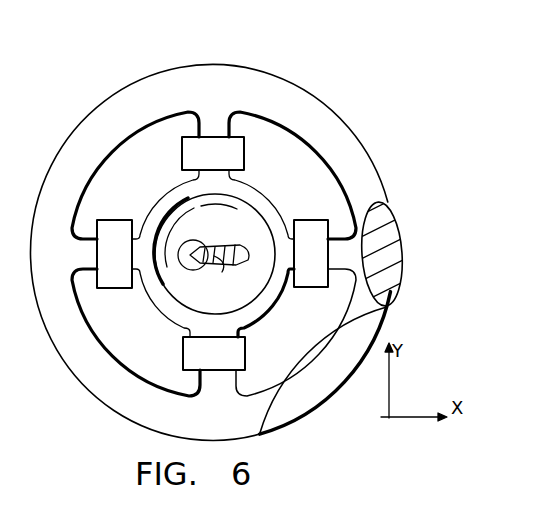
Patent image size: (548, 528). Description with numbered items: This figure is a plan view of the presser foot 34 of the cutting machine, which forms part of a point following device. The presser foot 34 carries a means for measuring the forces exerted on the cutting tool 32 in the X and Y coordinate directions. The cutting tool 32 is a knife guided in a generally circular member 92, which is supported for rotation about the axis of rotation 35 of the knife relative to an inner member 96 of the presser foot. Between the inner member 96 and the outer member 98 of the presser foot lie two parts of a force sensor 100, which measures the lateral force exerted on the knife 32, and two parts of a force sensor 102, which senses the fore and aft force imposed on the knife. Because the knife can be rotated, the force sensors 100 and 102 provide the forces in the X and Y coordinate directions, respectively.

The presser foot 34 is at (345, 124).
The outer member 98 is at (251, 80).
The inner member 96 is at (271, 306).
The force sensor 100 is at (244, 160).
The force sensor 102 is at (117, 220).
The circular member 92 is at (240, 218).
The cutting tool 32 is at (238, 210).
The axis of rotation 35 is at (220, 266).